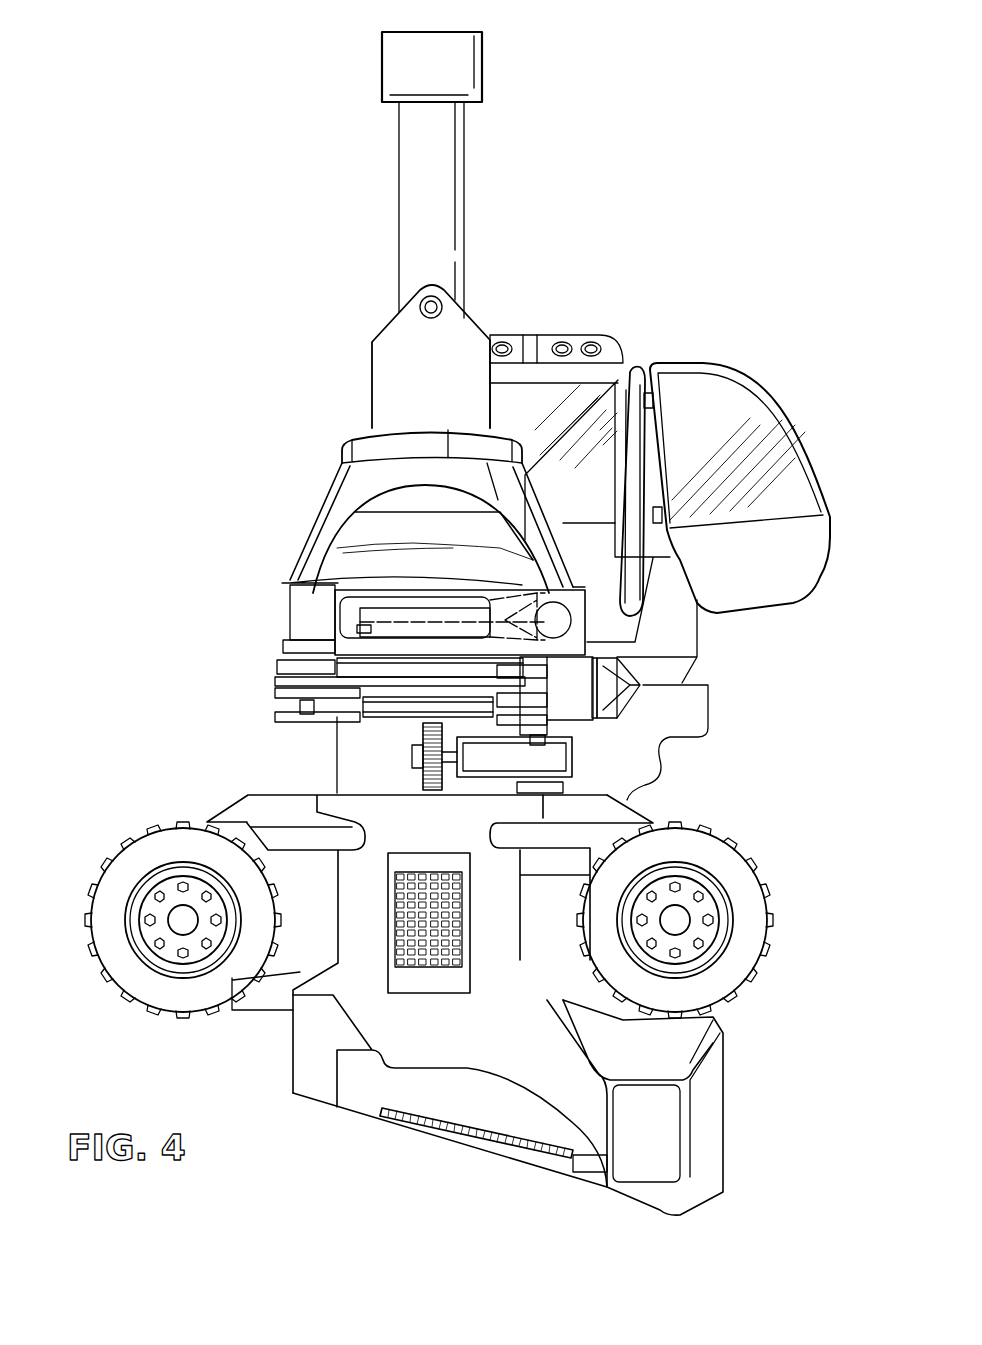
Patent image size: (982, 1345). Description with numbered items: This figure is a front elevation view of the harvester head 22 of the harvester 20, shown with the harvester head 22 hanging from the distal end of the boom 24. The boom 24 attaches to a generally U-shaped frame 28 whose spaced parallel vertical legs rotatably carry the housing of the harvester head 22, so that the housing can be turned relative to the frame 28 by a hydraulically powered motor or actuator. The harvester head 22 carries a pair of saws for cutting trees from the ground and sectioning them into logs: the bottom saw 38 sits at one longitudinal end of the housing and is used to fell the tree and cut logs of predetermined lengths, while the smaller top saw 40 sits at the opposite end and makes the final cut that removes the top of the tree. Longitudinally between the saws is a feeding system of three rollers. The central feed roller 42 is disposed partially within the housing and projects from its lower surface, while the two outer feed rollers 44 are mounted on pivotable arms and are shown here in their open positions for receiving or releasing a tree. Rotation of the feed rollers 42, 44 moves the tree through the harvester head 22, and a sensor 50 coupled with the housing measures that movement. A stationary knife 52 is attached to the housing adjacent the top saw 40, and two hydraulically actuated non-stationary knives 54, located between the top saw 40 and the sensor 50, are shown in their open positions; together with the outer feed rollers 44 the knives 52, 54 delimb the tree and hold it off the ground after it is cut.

The harvester 20 is at (528, 372).
The harvester head 22 is at (268, 653).
The boom 24 is at (446, 192).
The U-shaped frame 28 is at (318, 518).
The bottom saw 38 is at (485, 1133).
The top saw 40 is at (457, 608).
The central feed roller 42 is at (418, 940).
The outer feed rollers 44 is at (128, 985).
The sensor 50 is at (428, 770).
The stationary knife 52 is at (498, 557).
The non-stationary knives 54 is at (623, 677).